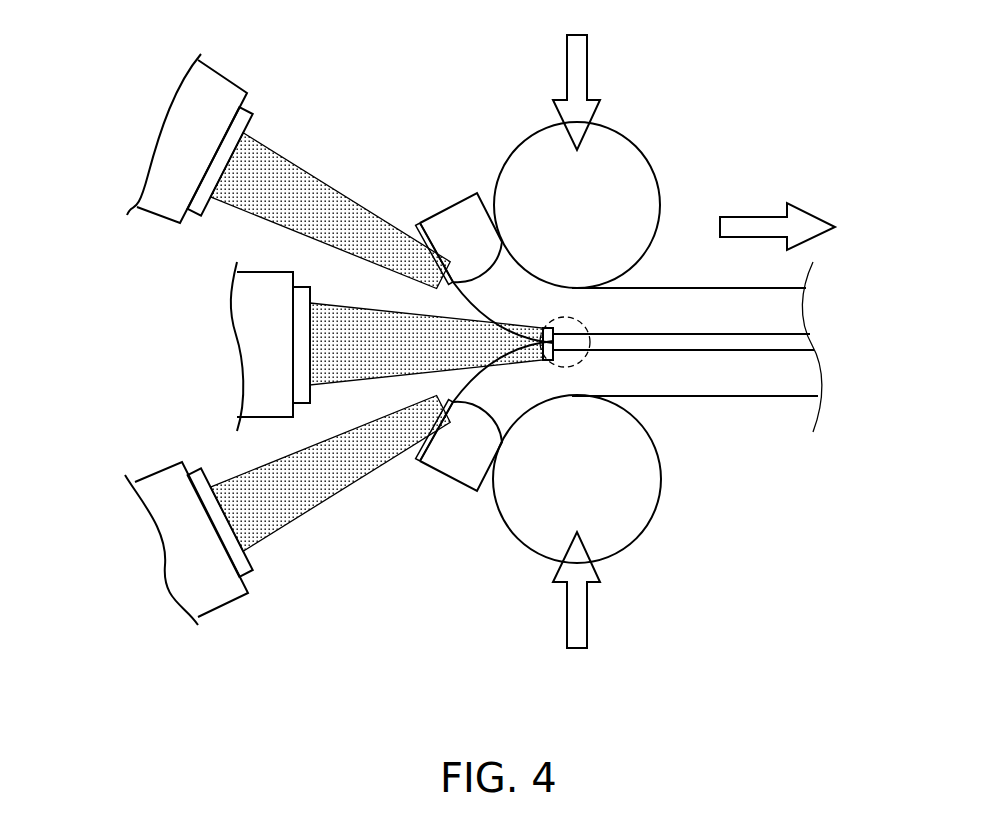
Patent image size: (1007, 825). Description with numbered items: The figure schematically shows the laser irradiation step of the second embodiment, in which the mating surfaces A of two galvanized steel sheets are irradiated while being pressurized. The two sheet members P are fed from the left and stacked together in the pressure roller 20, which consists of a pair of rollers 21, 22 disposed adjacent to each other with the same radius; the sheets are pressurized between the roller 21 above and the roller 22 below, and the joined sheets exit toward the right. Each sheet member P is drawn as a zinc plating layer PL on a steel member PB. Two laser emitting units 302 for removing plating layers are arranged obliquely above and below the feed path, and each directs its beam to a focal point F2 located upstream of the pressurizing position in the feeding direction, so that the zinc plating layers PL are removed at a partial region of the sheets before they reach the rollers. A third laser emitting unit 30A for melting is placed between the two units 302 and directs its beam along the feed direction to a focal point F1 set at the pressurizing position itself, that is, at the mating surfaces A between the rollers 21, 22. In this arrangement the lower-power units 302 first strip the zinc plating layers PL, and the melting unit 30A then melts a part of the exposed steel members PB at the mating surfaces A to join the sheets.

The laser emitting unit for removing plating layers 302 is at (212, 86).
The light irradiation unit 30A is at (243, 347).
The sheet member P is at (453, 66).
The zinc plating layer PL is at (415, 222).
The steel member PB is at (458, 204).
The focal point F2 is at (497, 253).
The focal point F1 is at (585, 340).
The pressure roller 20 is at (635, 326).
The roller 21 is at (640, 150).
The roller 22 is at (643, 432).
The mating surfaces A is at (565, 345).